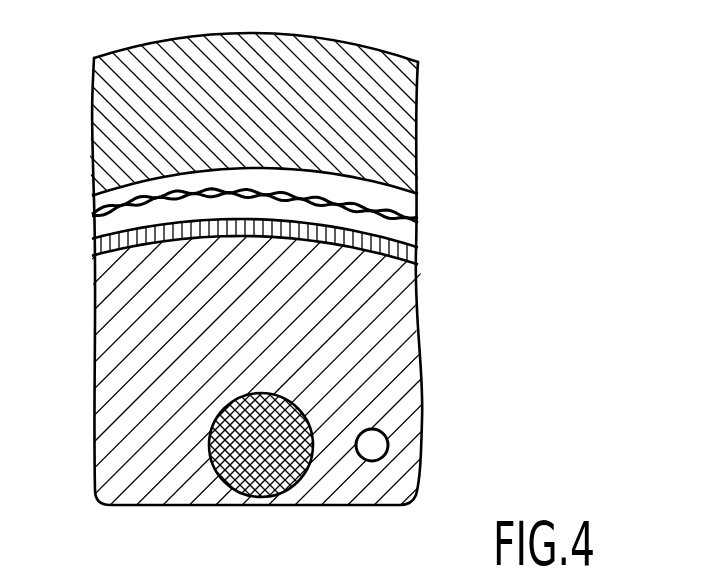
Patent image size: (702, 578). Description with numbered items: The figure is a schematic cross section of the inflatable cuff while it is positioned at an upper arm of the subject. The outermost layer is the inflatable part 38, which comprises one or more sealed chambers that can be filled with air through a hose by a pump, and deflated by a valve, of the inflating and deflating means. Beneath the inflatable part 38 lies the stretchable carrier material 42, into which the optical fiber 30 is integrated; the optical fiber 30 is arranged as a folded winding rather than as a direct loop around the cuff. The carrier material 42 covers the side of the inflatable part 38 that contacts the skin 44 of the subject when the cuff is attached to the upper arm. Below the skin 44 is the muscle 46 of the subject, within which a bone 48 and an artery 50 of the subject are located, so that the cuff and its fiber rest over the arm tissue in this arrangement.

The optical fiber 30 is at (418, 219).
The inflatable part 38 is at (130, 130).
The stretchable carrier material 42 is at (107, 202).
The skin 44 is at (112, 249).
The muscle 46 is at (378, 335).
The bone 48 is at (261, 477).
The artery 50 is at (375, 445).